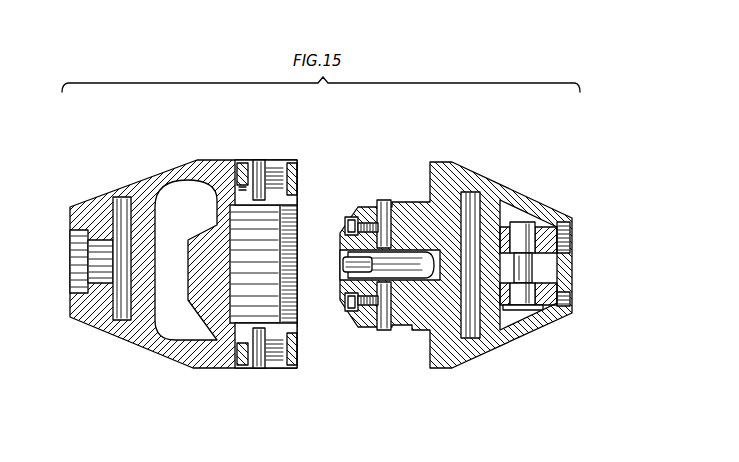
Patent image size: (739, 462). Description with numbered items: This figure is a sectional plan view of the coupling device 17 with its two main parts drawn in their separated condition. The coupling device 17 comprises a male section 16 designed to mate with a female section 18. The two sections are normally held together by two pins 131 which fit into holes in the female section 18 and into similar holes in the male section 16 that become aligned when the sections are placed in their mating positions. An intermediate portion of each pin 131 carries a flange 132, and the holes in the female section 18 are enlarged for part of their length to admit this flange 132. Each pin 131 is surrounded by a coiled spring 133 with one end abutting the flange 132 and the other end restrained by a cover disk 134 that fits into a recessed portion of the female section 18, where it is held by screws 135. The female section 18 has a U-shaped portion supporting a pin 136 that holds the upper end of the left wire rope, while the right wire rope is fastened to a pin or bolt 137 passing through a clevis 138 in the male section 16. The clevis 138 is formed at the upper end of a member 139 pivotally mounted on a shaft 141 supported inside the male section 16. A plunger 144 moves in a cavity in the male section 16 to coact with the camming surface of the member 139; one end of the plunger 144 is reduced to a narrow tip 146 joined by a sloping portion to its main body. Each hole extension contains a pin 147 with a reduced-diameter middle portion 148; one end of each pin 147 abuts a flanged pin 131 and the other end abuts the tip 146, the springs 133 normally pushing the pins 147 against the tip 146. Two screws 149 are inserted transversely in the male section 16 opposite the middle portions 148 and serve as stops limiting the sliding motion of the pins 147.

The male section 16 is at (440, 170).
The coupling device 17 is at (342, 119).
The female section 18 is at (177, 178).
The pin 131 is at (257, 161).
The flange 132 is at (270, 194).
The coiled spring 133 is at (239, 366).
The cover disk 134 is at (270, 160).
The screws 135 is at (235, 162).
The pin 136 is at (122, 212).
The pin or bolt 137 is at (530, 270).
The clevis 138 is at (557, 237).
The member 139 is at (490, 297).
The shaft 141 is at (467, 200).
The plunger 144 is at (380, 263).
The tip 146 is at (348, 264).
The pin 147 is at (383, 207).
The middle portion 148 is at (375, 308).
The screws 149 is at (350, 223).